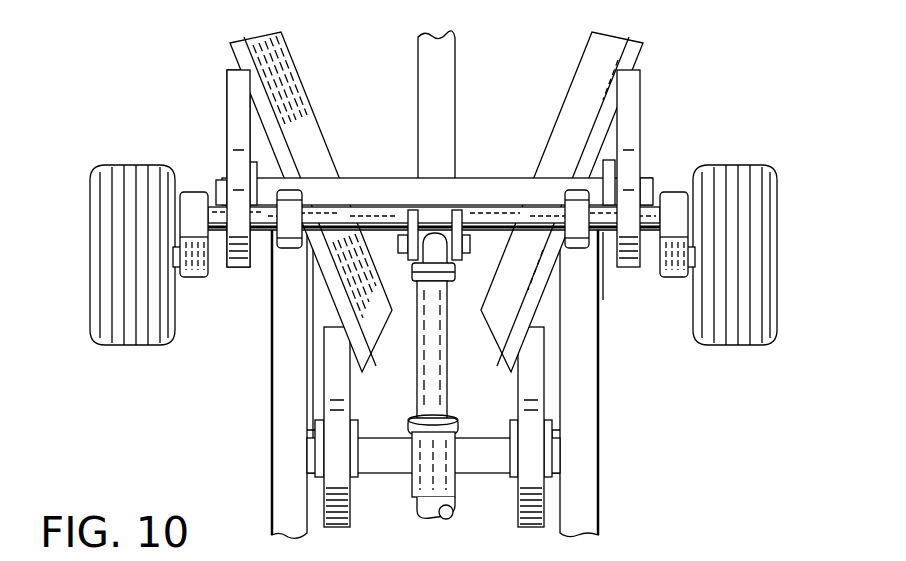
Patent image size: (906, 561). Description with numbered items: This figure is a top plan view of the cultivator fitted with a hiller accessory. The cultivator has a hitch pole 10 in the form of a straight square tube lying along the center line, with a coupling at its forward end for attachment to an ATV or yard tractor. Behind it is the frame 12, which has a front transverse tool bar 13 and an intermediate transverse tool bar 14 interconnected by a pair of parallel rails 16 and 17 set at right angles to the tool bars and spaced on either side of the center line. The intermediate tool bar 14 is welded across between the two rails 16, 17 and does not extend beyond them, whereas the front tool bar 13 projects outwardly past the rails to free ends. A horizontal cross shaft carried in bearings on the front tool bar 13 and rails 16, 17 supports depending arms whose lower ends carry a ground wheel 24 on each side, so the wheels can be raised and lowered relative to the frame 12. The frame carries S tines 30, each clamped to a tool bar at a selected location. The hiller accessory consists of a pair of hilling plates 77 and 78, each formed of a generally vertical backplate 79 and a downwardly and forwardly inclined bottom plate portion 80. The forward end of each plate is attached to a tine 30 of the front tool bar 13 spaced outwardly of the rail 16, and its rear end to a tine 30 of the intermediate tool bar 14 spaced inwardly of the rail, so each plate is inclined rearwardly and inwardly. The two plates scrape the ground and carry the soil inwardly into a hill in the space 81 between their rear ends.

The hitch pole 10 is at (456, 97).
The frame 12 is at (270, 333).
The front transverse tool bar 13 is at (482, 180).
The intermediate transverse tool bar 14 is at (482, 476).
The rail 16 is at (280, 404).
The rail 17 is at (583, 488).
The ground wheel 24 is at (93, 180).
The S tine 30 is at (227, 137).
The hilling plate 77 is at (269, 189).
The hilling plate 78 is at (637, 33).
The backplate 79 is at (297, 118).
The bottom plate portion 80 is at (306, 147).
The space 81 is at (404, 352).